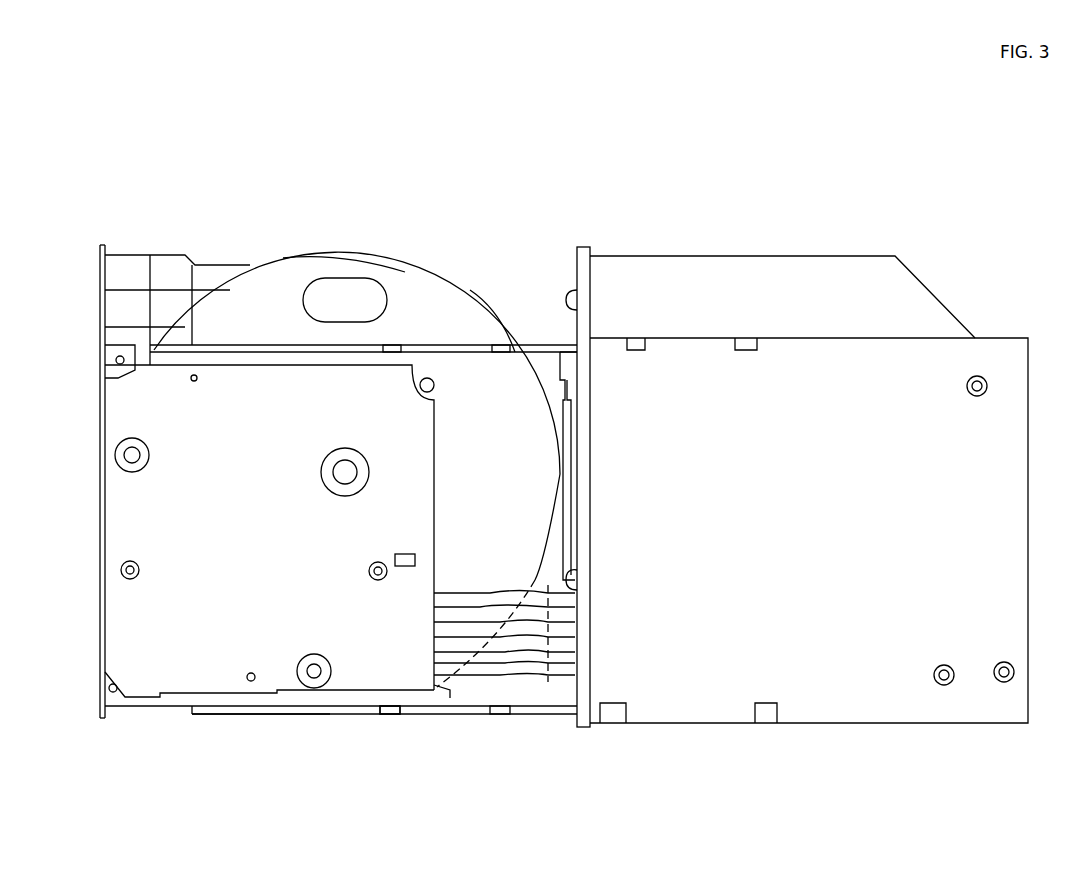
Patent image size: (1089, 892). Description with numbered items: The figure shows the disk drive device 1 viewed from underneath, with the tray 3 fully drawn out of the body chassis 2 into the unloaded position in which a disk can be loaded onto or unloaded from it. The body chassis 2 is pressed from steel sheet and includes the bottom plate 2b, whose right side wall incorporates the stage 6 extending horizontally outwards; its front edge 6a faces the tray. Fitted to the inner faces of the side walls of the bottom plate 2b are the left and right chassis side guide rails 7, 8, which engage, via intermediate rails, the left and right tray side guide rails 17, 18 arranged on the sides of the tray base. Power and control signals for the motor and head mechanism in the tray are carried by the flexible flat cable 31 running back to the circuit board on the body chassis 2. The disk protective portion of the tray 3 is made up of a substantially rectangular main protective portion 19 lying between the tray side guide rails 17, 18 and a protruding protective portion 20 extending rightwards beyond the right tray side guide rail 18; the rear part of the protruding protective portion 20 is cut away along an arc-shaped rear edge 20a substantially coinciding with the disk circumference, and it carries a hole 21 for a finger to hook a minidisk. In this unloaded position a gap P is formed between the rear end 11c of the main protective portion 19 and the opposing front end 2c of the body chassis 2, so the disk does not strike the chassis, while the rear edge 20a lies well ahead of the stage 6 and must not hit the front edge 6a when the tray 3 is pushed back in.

The disk drive device 1 is at (578, 140).
The body chassis 2 is at (803, 200).
The bottom plate 2b is at (830, 685).
The front end of the body chassis 2c is at (572, 575).
The tray 3 is at (353, 205).
The stage 6 is at (895, 285).
The front edge of the stage 6a is at (585, 310).
The left chassis side guide rail 7 is at (382, 722).
The right chassis side guide rail 8 is at (525, 345).
The rear end of the disk protective portion 11c is at (565, 395).
The left tray side guide rail 17 is at (212, 722).
The right tray side guide rail 18 is at (258, 345).
The main protective portion 19 is at (527, 514).
The protruding protective portion 20 is at (458, 300).
The rear edge of the protruding protective portion 20a is at (475, 300).
The hole 21 is at (355, 290).
The flexible flat cable 31 is at (452, 600).
The gap P is at (540, 373).